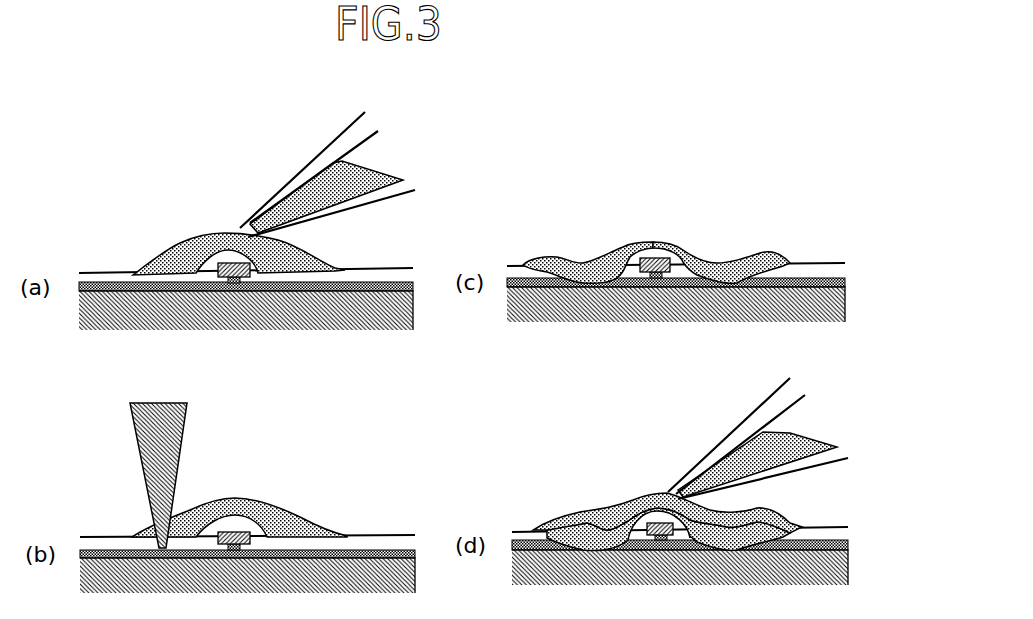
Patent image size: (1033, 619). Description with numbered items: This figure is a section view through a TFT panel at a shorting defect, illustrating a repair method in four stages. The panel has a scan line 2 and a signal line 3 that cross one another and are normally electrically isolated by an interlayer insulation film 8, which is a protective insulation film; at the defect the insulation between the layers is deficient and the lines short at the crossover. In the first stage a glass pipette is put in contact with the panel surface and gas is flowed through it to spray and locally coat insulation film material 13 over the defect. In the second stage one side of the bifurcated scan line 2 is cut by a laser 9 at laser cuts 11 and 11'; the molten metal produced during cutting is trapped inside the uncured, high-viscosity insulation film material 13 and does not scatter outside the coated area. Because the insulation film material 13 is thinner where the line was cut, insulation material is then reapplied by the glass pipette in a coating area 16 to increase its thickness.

The scan line 2 is at (413, 284).
The signal line 3 is at (229, 265).
The interlayer insulation film 8 is at (406, 278).
The laser 9 is at (148, 437).
The laser cut 11 is at (588, 311).
The laser cut 11' is at (721, 311).
The insulation film material 13 is at (188, 245).
The coating area 16 is at (615, 505).